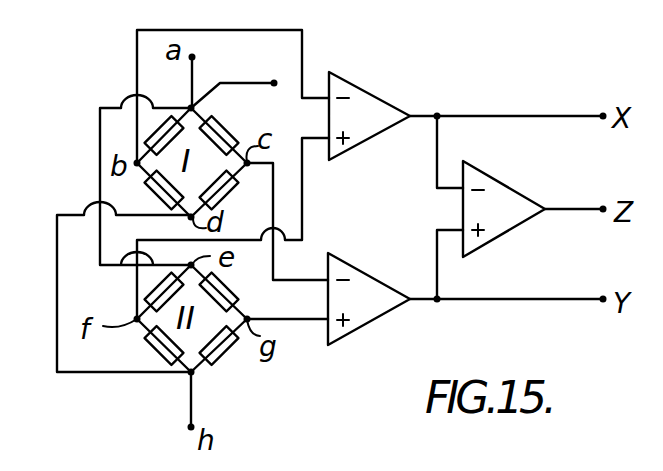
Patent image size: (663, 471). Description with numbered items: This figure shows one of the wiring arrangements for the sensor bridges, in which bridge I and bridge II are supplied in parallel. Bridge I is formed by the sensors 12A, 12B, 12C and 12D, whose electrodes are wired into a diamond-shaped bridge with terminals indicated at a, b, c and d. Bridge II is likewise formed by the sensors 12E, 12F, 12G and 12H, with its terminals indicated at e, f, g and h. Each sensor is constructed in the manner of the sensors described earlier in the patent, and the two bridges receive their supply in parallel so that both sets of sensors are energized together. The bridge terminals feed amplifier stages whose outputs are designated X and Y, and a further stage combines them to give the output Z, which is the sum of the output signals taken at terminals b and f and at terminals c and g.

The sensor 12A is at (153, 139).
The sensor 12B is at (215, 139).
The sensor 12C is at (153, 187).
The sensor 12D is at (230, 190).
The sensor 12E is at (145, 290).
The sensor 12F is at (233, 292).
The sensor 12G is at (152, 347).
The sensor 12H is at (220, 352).